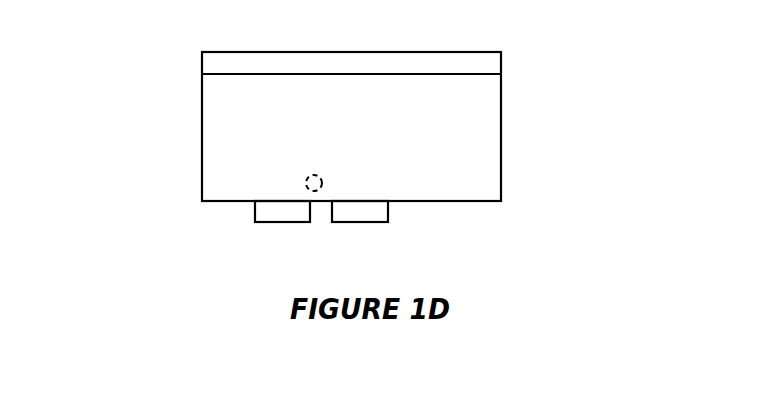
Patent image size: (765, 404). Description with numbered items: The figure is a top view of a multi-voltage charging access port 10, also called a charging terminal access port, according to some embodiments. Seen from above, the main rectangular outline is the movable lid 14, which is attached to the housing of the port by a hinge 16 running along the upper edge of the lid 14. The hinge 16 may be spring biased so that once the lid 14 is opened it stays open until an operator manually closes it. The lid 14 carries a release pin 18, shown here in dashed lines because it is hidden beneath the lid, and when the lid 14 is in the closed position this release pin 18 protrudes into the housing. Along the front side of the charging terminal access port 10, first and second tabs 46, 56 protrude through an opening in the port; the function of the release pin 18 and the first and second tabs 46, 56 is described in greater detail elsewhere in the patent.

The multi-voltage charging access port 10 is at (188, 130).
The movable lid 14 is at (485, 135).
The hinge 16 is at (240, 60).
The release pin 18 is at (307, 178).
The first tab 46 is at (268, 212).
The second tab 56 is at (366, 212).